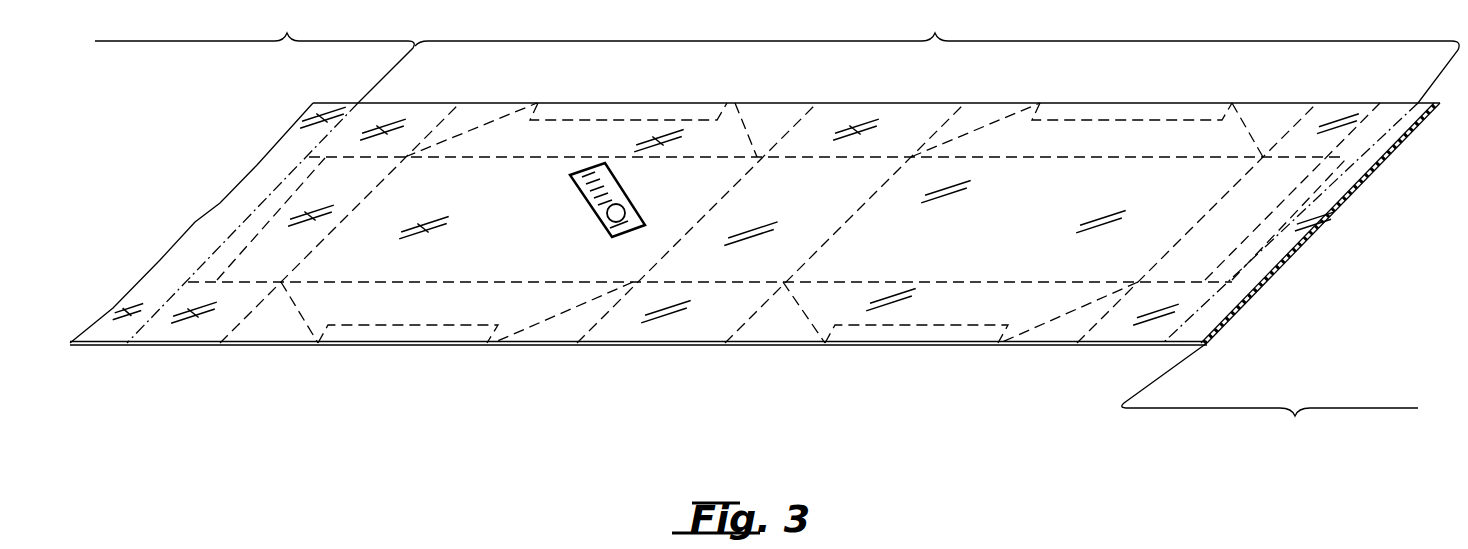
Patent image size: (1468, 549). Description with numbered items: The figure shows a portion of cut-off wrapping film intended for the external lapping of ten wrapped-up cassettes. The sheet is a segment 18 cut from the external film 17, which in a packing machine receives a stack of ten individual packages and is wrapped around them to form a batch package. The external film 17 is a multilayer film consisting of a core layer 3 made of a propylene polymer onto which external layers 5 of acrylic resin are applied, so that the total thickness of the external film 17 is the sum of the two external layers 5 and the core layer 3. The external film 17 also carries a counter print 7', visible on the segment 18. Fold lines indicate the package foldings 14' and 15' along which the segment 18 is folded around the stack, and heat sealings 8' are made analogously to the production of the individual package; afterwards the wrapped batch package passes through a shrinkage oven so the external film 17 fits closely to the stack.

The segment 18 is at (777, 227).
The external film 17 is at (290, 150).
The external layer 5 is at (1290, 237).
The core layer 3 is at (1293, 262).
The heat sealing 8' is at (804, 233).
The package folding 14' is at (522, 235).
The package folding 15' is at (1028, 234).
The counter print 7' is at (583, 200).